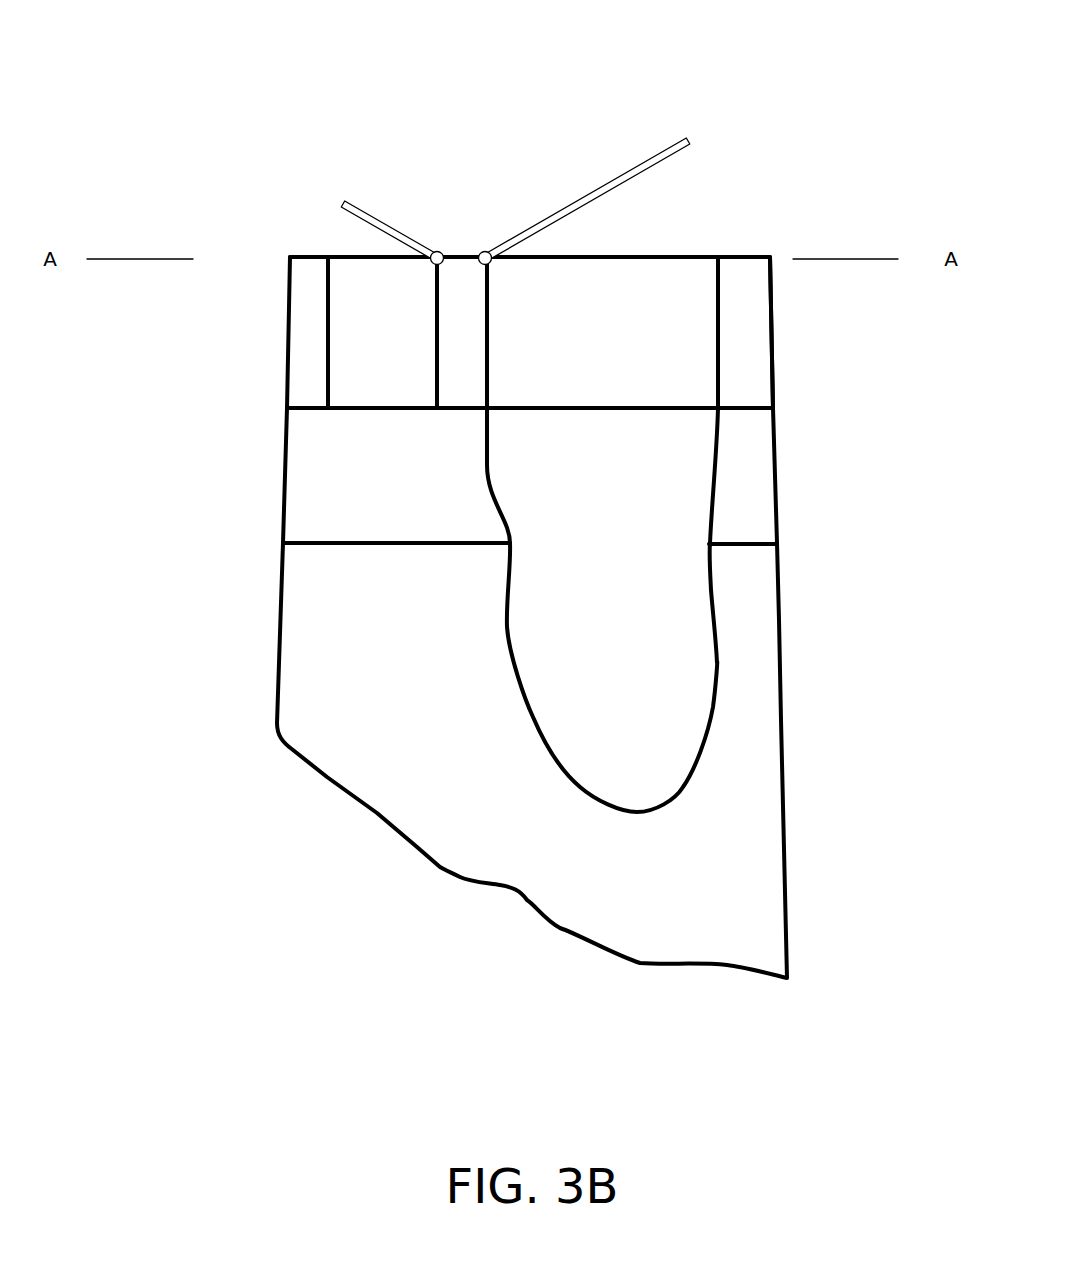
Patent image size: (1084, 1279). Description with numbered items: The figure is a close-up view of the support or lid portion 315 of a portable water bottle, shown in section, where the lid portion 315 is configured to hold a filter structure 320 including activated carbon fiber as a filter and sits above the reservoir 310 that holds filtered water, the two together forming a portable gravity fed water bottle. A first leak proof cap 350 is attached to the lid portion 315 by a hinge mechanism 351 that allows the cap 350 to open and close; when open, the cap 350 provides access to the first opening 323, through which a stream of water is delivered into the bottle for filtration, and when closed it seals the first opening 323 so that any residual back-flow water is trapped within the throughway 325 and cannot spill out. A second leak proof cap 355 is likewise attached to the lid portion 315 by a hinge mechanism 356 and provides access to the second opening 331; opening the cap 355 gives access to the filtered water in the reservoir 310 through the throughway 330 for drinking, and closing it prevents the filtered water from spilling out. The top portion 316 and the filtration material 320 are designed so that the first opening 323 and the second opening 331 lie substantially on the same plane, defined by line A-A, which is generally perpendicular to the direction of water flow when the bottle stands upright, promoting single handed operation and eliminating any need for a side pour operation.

The reservoir 310 is at (532, 617).
The support or lid portion 315 is at (808, 273).
The top portion 316 is at (250, 258).
The filter structure 320 is at (718, 663).
The first opening 323 is at (690, 257).
The throughway 325 is at (602, 332).
The throughway 330 is at (382, 332).
The second opening 331 is at (358, 256).
The first leak proof cap 350 is at (630, 166).
The hinge mechanism 351 is at (485, 251).
The second leak proof cap 355 is at (370, 206).
The hinge mechanism 356 is at (437, 251).